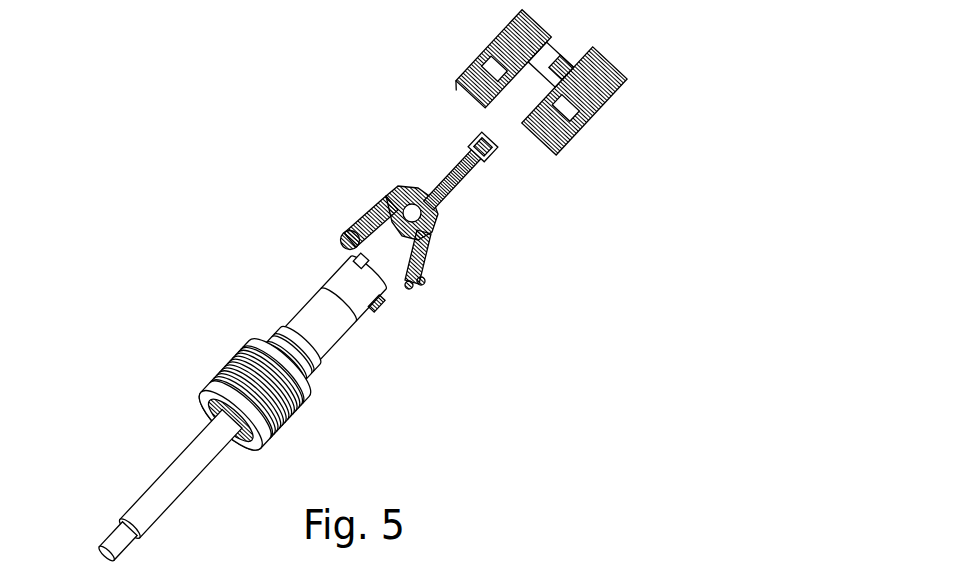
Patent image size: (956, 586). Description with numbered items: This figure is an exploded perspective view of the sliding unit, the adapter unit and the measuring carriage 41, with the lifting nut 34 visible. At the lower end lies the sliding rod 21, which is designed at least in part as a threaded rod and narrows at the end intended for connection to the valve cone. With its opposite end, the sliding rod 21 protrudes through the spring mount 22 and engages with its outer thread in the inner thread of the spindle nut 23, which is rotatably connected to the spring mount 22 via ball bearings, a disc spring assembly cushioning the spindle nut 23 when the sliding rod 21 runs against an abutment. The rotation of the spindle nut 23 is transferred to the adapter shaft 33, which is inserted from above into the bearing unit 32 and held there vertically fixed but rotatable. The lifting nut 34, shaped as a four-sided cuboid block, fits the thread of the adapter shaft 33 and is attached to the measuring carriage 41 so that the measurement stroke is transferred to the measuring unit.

The sliding rod 21 is at (190, 463).
The spring mount 22 is at (207, 350).
The spindle nut 23 is at (318, 315).
The bearing unit 32 is at (373, 200).
The adapter shaft 33 is at (447, 177).
The lifting nut 34 is at (488, 155).
The measuring carriage 41 is at (568, 53).